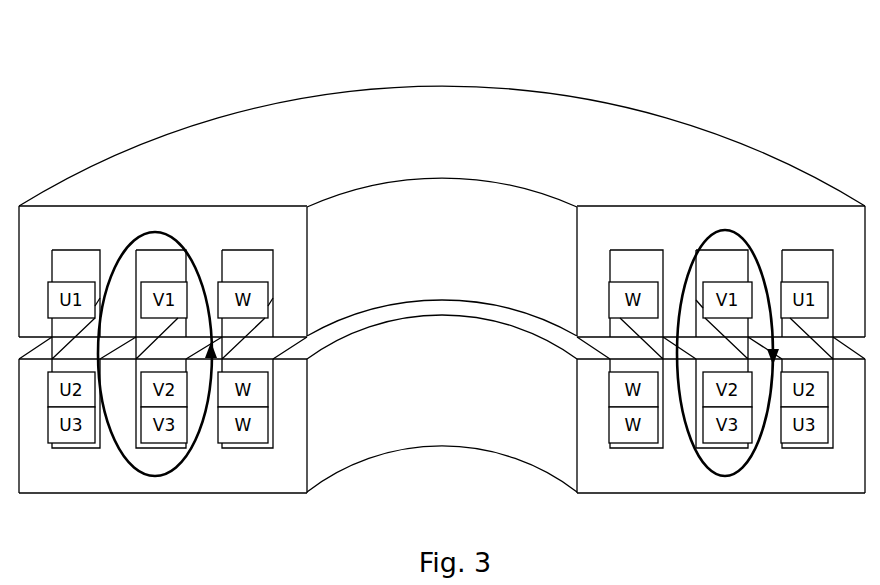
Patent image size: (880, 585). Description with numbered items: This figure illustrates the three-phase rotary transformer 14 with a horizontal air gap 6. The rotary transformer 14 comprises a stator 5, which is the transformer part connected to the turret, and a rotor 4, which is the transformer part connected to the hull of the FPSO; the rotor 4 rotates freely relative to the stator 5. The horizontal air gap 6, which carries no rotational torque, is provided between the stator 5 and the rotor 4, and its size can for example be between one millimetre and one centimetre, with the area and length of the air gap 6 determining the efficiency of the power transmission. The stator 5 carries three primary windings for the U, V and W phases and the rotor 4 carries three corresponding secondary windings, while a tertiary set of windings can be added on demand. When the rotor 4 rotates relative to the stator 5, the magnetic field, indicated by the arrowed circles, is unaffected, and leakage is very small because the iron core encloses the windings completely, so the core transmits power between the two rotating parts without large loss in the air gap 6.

The rotor 4 is at (390, 417).
The stator 5 is at (525, 107).
The horizontal air gap 6 is at (527, 322).
The three-phase rotary transformer 14 is at (412, 85).